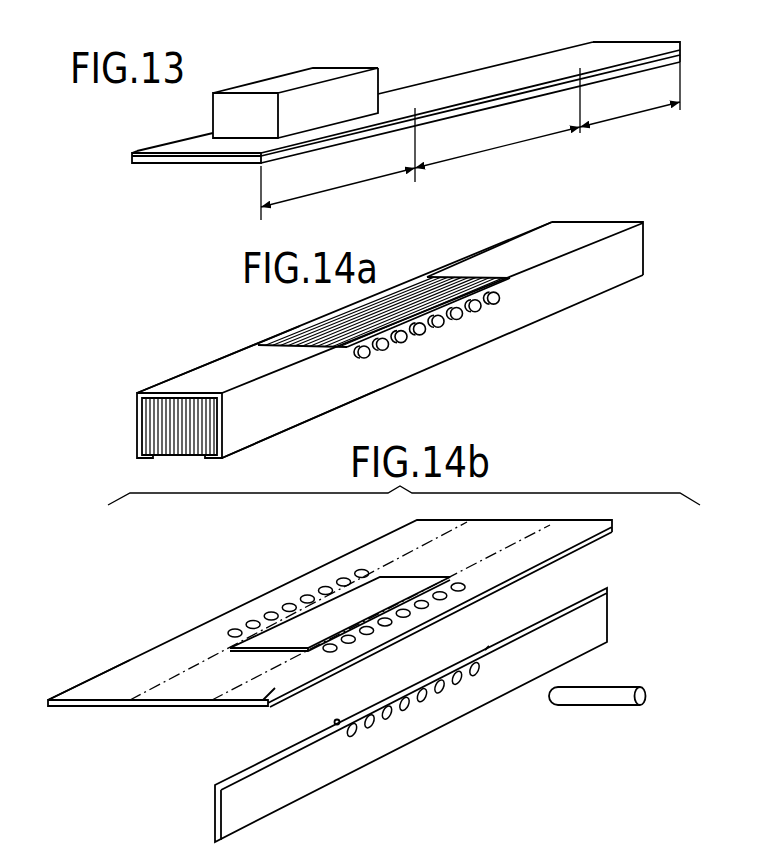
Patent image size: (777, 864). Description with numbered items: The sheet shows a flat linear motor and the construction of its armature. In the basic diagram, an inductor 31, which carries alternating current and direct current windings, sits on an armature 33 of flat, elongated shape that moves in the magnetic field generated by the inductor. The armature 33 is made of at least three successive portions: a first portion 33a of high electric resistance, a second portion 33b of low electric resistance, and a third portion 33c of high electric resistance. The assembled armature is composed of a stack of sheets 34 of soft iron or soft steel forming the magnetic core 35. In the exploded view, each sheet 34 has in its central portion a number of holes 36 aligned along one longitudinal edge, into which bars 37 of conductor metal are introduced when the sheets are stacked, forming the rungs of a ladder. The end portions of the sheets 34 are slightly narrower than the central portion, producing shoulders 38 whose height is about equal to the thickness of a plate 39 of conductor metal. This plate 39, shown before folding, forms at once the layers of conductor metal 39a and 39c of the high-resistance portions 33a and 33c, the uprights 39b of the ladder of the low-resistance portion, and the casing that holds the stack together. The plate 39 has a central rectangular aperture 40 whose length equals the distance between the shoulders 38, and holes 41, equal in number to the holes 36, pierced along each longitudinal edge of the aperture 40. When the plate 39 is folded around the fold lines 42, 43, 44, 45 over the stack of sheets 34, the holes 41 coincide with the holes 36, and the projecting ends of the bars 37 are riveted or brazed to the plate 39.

In FIG. 13, the inductor 31 is at (242, 105).
In FIG. 13, the armature 33 is at (492, 67).
In FIG. 14a, the armature 33 is at (458, 252).
In FIG. 13, the first portion 33a is at (175, 147).
In FIG. 13, the second portion 33b is at (420, 96).
In FIG. 13, the third portion 33c is at (630, 48).
In FIG. 14a, the sheets 34 is at (157, 427).
In FIG. 14b, the sheets 34 is at (275, 797).
In FIG. 14a, the magnetic core 35 is at (181, 434).
In FIG. 14b, the holes 36 is at (423, 698).
In FIG. 14a, the bars 37 is at (496, 303).
In FIG. 14b, the bars 37 is at (623, 697).
In FIG. 14b, the shoulders 38 is at (485, 652).
In FIG. 14a, the plate 39 is at (623, 250).
In FIG. 14b, the plate 39 is at (414, 537).
In FIG. 14a, the layer of conductor metal 39a is at (190, 385).
In FIG. 14a, the uprights 39b is at (422, 358).
In FIG. 14a, the layer of conductor metal 39c is at (525, 248).
In FIG. 14b, the rectangular aperture 40 is at (402, 576).
In FIG. 14b, the holes 41 is at (283, 606).
In FIG. 14a, the fold line 42 is at (137, 457).
In FIG. 14b, the fold line 42 is at (102, 673).
In FIG. 14a, the fold line 43 is at (212, 362).
In FIG. 14b, the fold line 43 is at (193, 668).
In FIG. 14a, the fold line 44 is at (612, 237).
In FIG. 14b, the fold line 44 is at (260, 673).
In FIG. 14a, the fold line 45 is at (583, 300).
In FIG. 14b, the fold line 45 is at (253, 702).